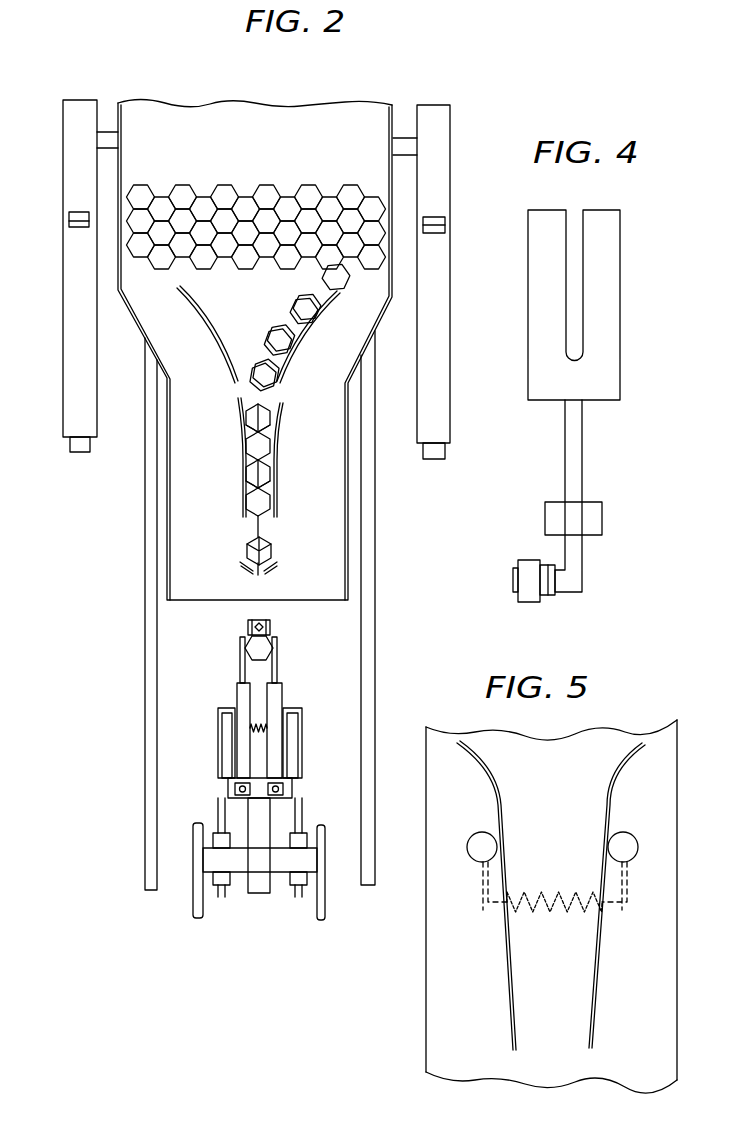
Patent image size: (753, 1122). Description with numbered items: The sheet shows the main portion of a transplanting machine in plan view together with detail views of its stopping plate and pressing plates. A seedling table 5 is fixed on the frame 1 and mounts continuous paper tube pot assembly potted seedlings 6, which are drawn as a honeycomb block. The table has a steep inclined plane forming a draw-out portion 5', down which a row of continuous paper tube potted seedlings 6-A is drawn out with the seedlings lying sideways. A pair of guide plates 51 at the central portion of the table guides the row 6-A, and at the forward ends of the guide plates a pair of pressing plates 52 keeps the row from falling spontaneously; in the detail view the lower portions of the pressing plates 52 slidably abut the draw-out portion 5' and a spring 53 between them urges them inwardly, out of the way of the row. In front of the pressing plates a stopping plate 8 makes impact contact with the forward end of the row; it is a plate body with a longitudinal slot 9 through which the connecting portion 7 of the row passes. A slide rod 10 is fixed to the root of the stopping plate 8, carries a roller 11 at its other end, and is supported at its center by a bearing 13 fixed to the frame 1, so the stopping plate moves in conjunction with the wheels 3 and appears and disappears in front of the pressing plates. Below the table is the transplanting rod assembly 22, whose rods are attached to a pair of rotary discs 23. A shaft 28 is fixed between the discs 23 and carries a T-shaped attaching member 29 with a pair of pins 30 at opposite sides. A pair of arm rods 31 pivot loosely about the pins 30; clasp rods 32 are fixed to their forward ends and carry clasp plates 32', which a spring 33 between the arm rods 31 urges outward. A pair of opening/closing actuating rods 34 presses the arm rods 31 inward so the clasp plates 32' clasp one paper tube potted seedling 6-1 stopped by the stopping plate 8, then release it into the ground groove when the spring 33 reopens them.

In FIG. 2, the frame 1 is at (145, 663).
In FIG. 2, the wheels 3 is at (63, 152).
In FIG. 2, the seedling table 5 is at (255, 330).
In FIG. 2, the draw-out portion 5' is at (378, 482).
In FIG. 5, the draw-out portion 5' is at (569, 906).
In FIG. 2, the continuous paper tube pot assembly potted seedlings 6 is at (245, 197).
In FIG. 2, the row of continuous paper tube potted seedlings 6-A is at (274, 334).
In FIG. 2, the paper tube potted seedling 6-1 is at (257, 622).
In FIG. 2, the connecting portion 7 is at (261, 528).
In FIG. 2, the stopping plate 8 is at (276, 572).
In FIG. 4, the stopping plate 8 is at (615, 327).
In FIG. 4, the slot 9 is at (577, 307).
In FIG. 4, the slide rod 10 is at (578, 452).
In FIG. 4, the roller 11 is at (530, 598).
In FIG. 4, the bearing 13 is at (595, 518).
In FIG. 2, the transplanting rod assembly 22 is at (340, 666).
In FIG. 2, the rotary discs 23 is at (193, 832).
In FIG. 2, the shaft 28 is at (238, 865).
In FIG. 2, the T-shaped attaching member 29 is at (265, 815).
In FIG. 2, the pins 30 is at (232, 767).
In FIG. 2, the arm rods 31 is at (238, 695).
In FIG. 2, the clasp rods 32 is at (255, 659).
In FIG. 2, the clasp plates 32' is at (254, 632).
In FIG. 2, the spring 33 is at (252, 728).
In FIG. 2, the opening/closing actuating rods 34 is at (302, 728).
In FIG. 2, the guide plates 51 is at (192, 308).
In FIG. 2, the pressing plates 52 is at (238, 428).
In FIG. 5, the pressing plates 52 is at (505, 957).
In FIG. 5, the spring 53 is at (560, 892).